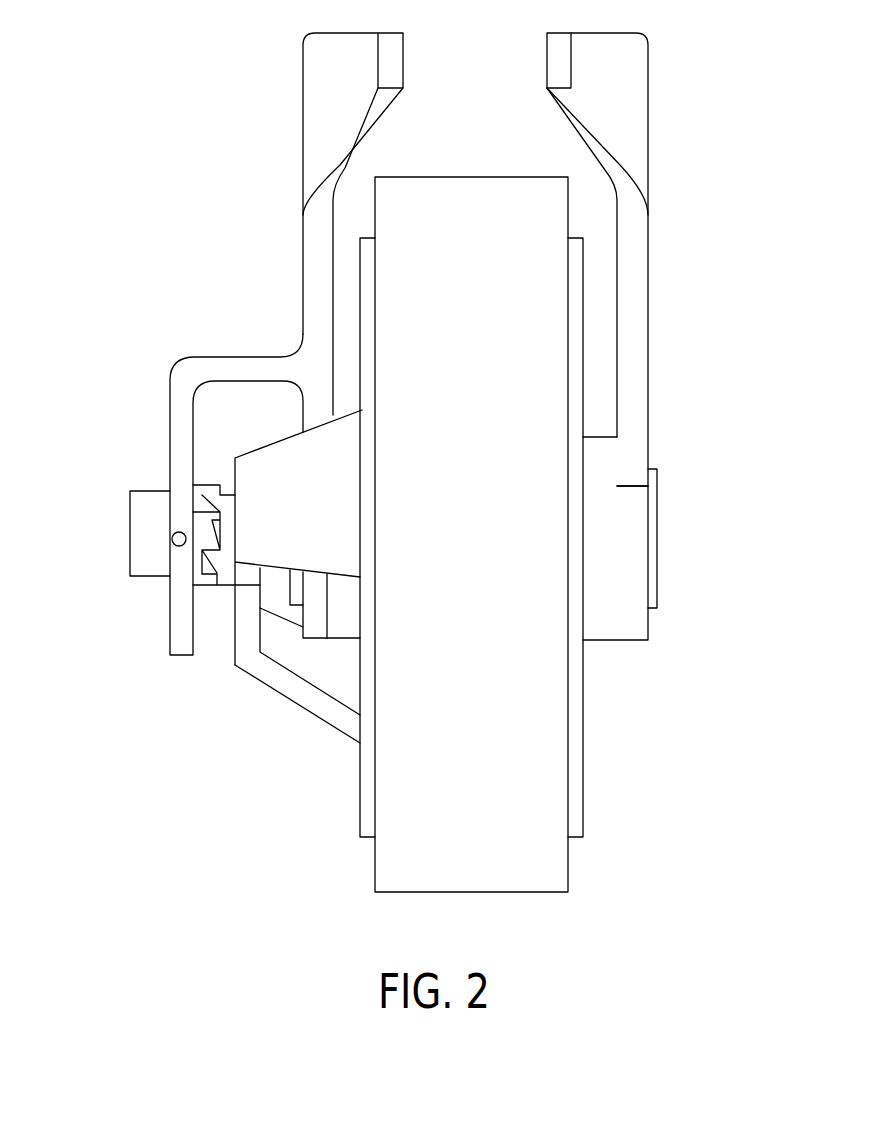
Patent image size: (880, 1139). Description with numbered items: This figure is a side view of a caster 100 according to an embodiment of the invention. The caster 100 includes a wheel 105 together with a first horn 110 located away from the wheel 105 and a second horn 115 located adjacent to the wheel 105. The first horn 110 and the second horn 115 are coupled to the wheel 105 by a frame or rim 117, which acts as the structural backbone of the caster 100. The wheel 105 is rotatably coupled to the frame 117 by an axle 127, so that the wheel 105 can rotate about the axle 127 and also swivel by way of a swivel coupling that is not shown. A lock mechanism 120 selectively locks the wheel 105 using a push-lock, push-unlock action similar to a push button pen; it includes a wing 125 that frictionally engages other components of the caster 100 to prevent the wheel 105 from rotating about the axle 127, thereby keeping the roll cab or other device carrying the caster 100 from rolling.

The caster 100 is at (410, 462).
The wheel 105 is at (548, 713).
The first horn 110 is at (320, 80).
The second horn 115 is at (640, 75).
The frame or rim 117 is at (265, 497).
The lock mechanism 120 is at (128, 543).
The wing 125 is at (282, 687).
The axle 127 is at (600, 467).